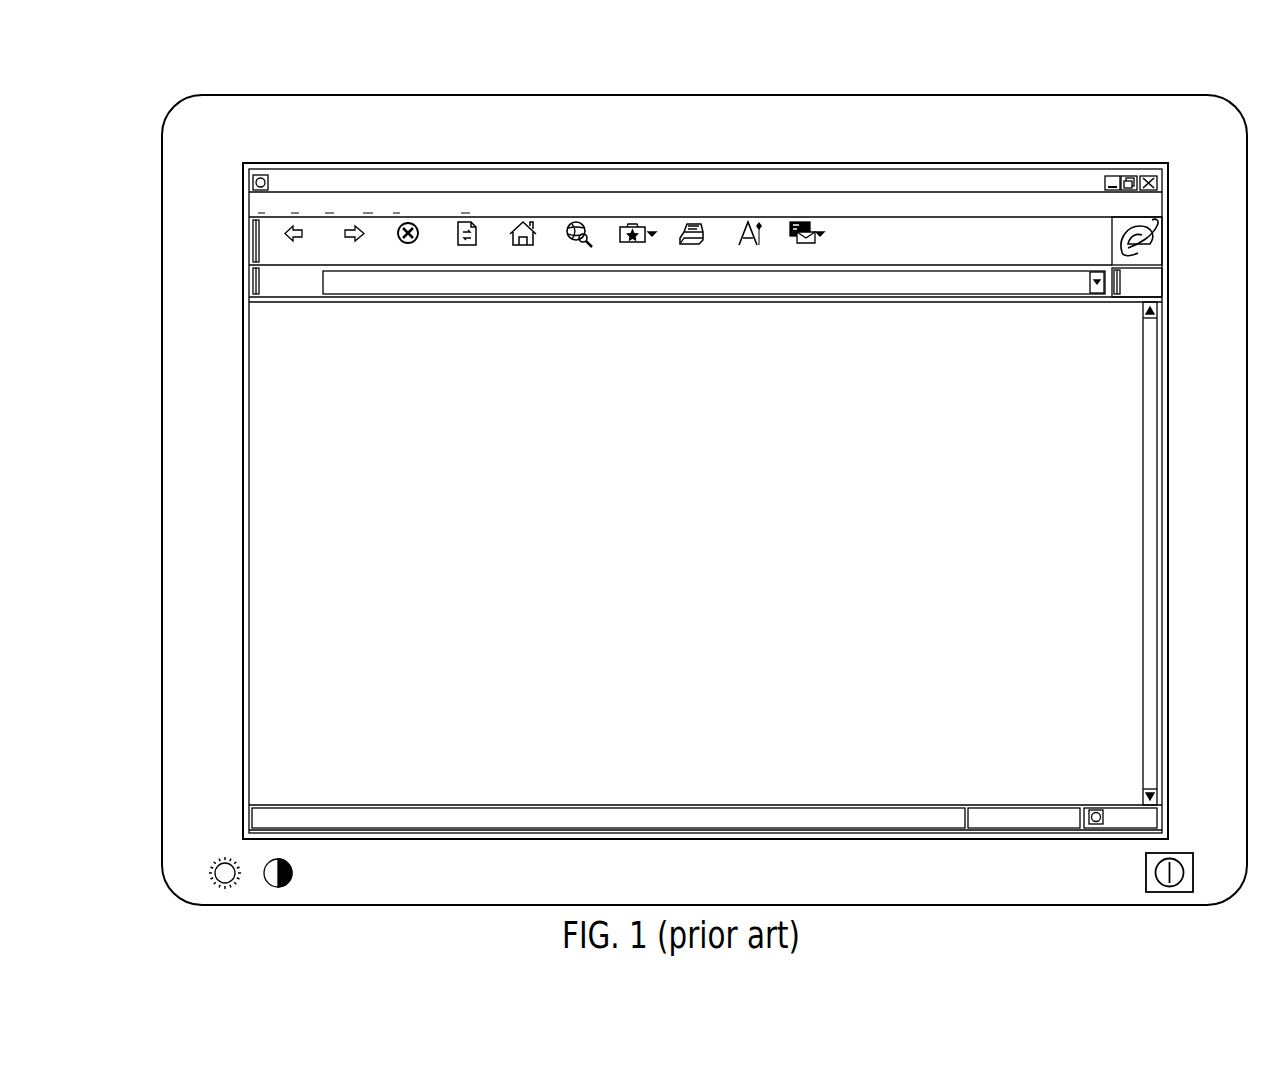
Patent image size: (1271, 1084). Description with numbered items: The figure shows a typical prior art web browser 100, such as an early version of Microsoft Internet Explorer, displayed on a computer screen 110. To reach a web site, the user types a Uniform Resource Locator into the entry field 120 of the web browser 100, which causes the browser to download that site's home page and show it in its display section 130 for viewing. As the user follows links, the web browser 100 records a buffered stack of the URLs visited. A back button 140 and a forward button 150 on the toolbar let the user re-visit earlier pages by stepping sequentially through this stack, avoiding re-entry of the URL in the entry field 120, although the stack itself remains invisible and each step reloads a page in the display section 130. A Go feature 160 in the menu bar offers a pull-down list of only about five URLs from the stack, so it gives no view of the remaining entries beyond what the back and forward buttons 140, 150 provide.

The web browser 100 is at (640, 472).
The computer screen 110 is at (173, 570).
The entry field 120 is at (277, 287).
The display section 130 is at (297, 695).
The back button 140 is at (287, 234).
The forward button 150 is at (348, 234).
The Go feature 160 is at (363, 208).